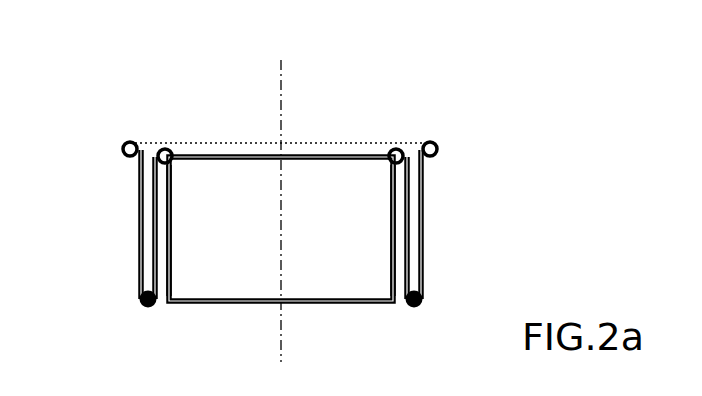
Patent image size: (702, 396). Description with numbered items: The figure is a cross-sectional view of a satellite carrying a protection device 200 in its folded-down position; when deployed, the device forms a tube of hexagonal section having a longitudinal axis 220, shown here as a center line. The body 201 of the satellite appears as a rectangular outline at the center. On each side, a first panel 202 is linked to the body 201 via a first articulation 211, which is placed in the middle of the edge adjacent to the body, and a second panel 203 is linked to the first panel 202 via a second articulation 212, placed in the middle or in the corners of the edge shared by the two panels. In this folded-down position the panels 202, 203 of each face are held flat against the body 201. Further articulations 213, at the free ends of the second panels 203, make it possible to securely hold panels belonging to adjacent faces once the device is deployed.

The antenna structure 200 is at (147, 62).
The body of the satellite 201 is at (247, 278).
The first panel 202 is at (162, 266).
The second panel 203 is at (138, 221).
The first articulation 211 is at (170, 142).
The second articulation 212 is at (138, 296).
The articulation 213 is at (121, 148).
The longitudinal axis 220 is at (283, 85).